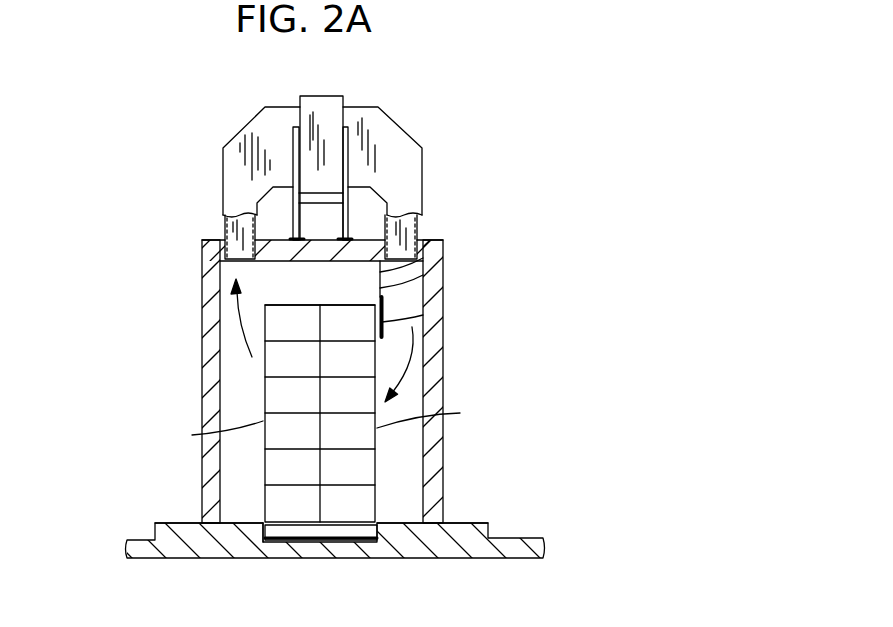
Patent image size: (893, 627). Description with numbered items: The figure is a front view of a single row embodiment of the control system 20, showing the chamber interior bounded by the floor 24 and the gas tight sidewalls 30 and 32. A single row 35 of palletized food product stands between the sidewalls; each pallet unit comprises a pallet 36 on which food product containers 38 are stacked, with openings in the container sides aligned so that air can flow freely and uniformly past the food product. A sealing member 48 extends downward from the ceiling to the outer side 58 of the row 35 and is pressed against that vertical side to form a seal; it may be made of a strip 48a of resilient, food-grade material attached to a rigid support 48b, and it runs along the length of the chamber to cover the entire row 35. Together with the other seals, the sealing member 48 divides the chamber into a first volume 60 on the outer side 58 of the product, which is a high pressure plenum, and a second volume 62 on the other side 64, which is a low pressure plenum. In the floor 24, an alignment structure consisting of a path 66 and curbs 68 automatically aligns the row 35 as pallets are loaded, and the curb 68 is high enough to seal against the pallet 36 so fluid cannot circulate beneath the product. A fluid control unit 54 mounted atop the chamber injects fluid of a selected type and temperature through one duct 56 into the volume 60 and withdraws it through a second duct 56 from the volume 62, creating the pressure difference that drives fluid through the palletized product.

The control system 20 is at (135, 377).
The floor 24 is at (442, 558).
The sidewall 30 is at (200, 305).
The sidewall 32 is at (445, 363).
The row 35 is at (337, 305).
The pallet 36 is at (328, 532).
The food product containers 38 is at (307, 337).
The sealing member 48 is at (424, 277).
The strip 48a is at (423, 315).
The rigid support 48b is at (425, 257).
The fluid control unit 54 is at (320, 96).
The ducts 56 is at (240, 128).
The outer side 58 is at (436, 414).
The first volume 60 is at (413, 482).
The second volume 62 is at (258, 402).
The other side 64 is at (210, 437).
The path 66 is at (262, 557).
The curbs 68 is at (243, 521).